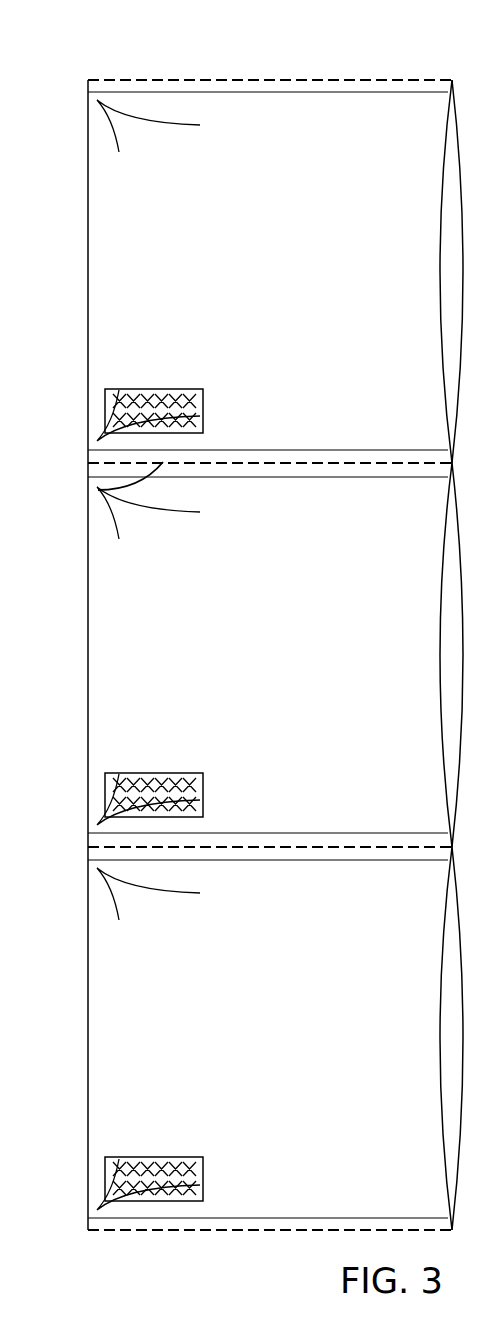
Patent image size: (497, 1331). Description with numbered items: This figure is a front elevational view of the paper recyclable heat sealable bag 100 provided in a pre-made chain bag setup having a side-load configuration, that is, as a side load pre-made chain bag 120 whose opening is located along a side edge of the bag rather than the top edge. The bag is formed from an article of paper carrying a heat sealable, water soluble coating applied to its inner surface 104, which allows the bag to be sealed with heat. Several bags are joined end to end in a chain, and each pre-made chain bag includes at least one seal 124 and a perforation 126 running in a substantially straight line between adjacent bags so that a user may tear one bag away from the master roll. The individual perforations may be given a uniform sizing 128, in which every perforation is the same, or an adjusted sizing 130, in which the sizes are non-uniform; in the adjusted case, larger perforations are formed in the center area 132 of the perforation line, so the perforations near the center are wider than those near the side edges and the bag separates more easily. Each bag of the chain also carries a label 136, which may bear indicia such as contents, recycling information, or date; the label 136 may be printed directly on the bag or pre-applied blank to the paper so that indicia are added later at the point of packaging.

The paper recyclable heat sealable bag 100 is at (132, 622).
The side load pre-made chain bag 120 is at (175, 54).
The inner surface 104 is at (450, 256).
The seal 124 is at (341, 80).
The perforation 126 is at (241, 624).
The uniform sizing 128 is at (229, 79).
The adjusted sizing 130 is at (101, 490).
The center area 132 is at (268, 848).
The label 136 is at (105, 411).